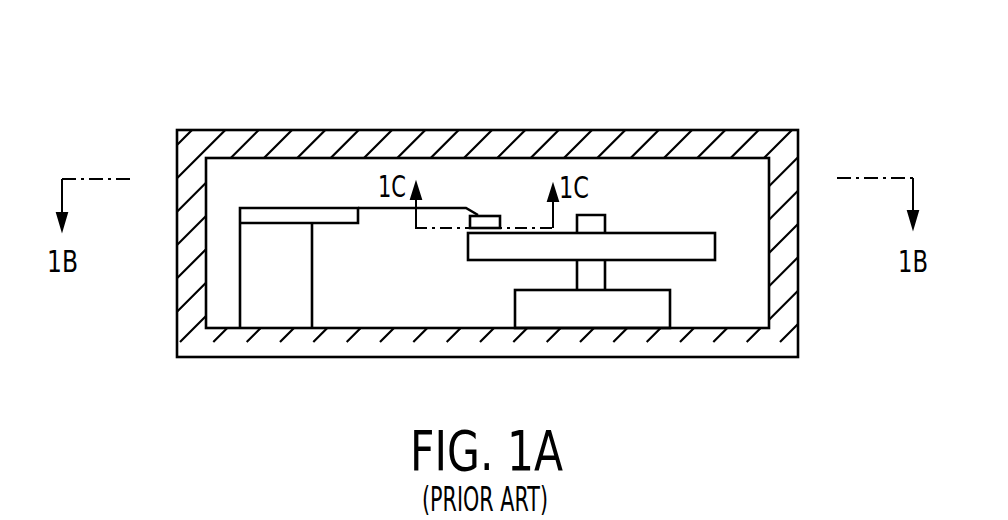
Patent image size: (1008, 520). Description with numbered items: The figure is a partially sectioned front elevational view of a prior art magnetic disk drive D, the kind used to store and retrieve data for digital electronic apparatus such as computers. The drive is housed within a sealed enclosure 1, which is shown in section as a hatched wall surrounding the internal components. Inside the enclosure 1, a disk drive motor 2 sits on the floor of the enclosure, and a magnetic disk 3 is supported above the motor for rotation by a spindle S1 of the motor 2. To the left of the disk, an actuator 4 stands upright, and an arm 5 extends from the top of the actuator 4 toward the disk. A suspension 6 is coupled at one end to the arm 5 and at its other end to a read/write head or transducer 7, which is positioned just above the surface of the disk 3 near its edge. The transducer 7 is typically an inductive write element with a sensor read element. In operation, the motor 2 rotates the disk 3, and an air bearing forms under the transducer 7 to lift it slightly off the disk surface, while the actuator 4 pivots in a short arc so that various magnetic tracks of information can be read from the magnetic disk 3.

The sealed enclosure 1 is at (458, 345).
The disk drive motor 2 is at (659, 301).
The magnetic disk 3 is at (653, 241).
The spindle S1 is at (602, 218).
The actuator 4 is at (310, 278).
The arm 5 is at (317, 215).
The suspension 6 is at (398, 212).
The transducer 7 is at (489, 217).
The magnetic disk drive D is at (580, 70).